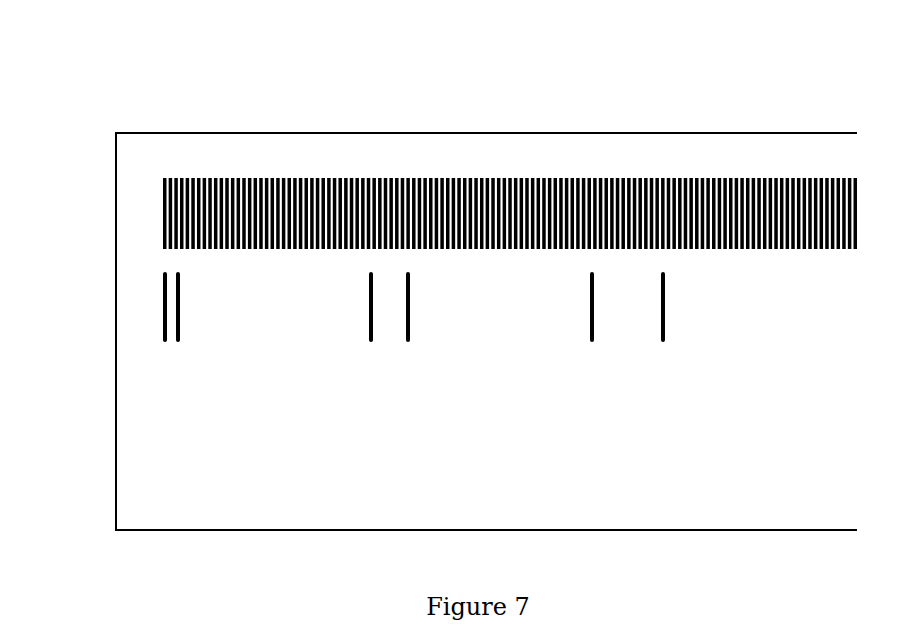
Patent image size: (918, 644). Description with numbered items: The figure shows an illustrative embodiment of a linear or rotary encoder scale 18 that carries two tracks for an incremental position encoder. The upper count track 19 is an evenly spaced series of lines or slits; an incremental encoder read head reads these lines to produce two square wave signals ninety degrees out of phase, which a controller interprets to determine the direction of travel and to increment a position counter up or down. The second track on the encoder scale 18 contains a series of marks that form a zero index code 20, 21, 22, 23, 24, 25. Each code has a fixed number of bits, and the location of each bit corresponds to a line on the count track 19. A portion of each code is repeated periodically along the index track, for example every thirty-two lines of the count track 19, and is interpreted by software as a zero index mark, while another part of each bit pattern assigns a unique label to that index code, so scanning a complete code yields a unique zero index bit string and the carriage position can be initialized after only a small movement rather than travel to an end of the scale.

The encoder scale 18 is at (486, 272).
The count track 19 is at (508, 123).
The zero index code 20 is at (89, 387).
The zero index code 21 is at (231, 387).
The zero index code 22 is at (424, 387).
The zero index code 23 is at (522, 387).
The zero index code 24 is at (685, 387).
The zero index code 25 is at (764, 344).